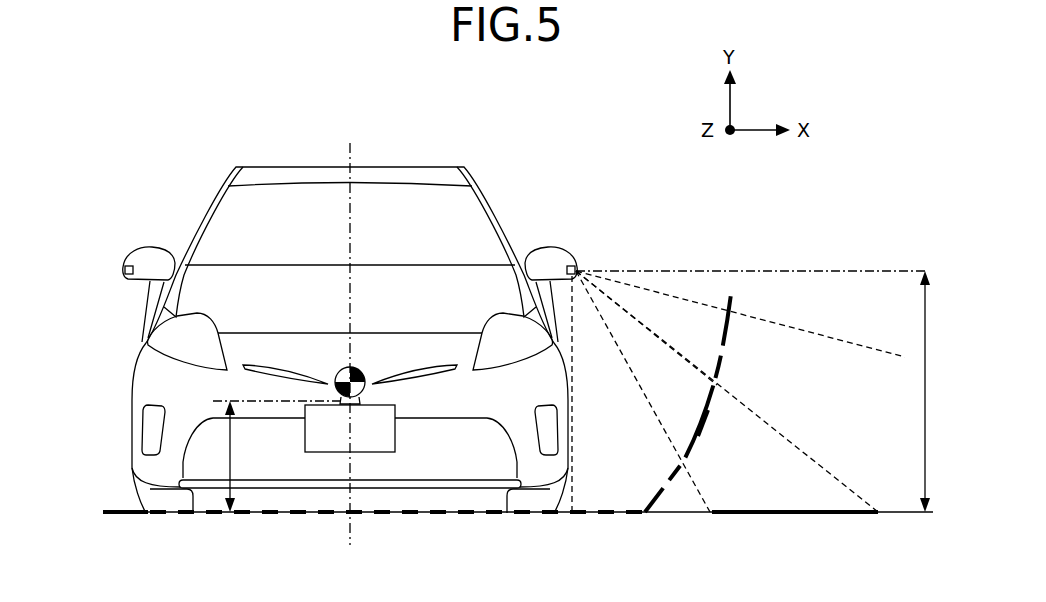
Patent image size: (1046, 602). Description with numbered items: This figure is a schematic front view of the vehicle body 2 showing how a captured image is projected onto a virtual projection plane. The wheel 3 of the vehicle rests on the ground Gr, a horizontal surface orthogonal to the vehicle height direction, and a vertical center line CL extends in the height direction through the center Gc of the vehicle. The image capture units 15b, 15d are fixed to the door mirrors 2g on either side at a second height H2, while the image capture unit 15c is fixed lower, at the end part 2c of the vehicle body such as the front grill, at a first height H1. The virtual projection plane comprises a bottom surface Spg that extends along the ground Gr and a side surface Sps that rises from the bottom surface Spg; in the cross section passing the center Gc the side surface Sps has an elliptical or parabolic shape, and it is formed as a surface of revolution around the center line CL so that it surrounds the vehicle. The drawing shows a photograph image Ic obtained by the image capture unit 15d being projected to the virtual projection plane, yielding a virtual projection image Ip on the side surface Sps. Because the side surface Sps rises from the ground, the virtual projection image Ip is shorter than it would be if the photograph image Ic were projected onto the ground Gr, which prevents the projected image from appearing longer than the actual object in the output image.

The vehicle body 2 is at (235, 162).
The end part of the vehicle body 2c is at (289, 410).
The door mirror 2g is at (143, 275).
The wheel 3 is at (169, 503).
The image capture unit 15b is at (131, 265).
The image capture unit 15c is at (397, 403).
The image capture unit 15d is at (567, 250).
The center of the vehicle Gc is at (338, 394).
The center line CL is at (350, 142).
The side surface Sps is at (726, 320).
The bottom surface Spg is at (108, 509).
The virtual projection image Ip is at (703, 420).
The photograph image Ic is at (790, 511).
The ground Gr is at (893, 511).
The first height H1 is at (276, 456).
The second height H2 is at (940, 391).